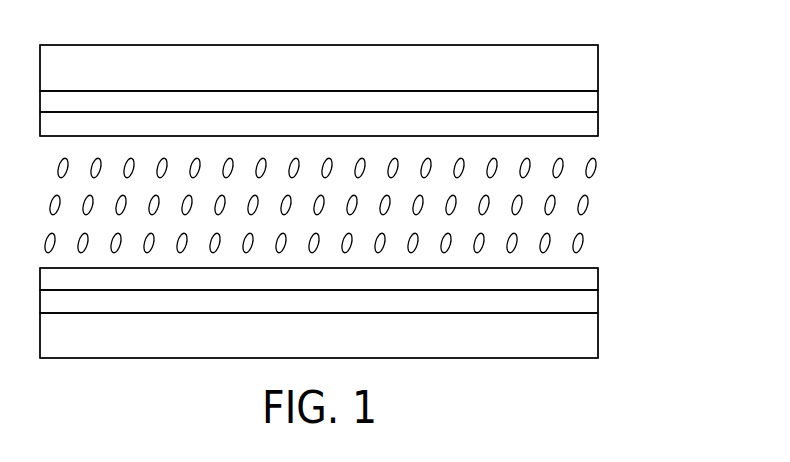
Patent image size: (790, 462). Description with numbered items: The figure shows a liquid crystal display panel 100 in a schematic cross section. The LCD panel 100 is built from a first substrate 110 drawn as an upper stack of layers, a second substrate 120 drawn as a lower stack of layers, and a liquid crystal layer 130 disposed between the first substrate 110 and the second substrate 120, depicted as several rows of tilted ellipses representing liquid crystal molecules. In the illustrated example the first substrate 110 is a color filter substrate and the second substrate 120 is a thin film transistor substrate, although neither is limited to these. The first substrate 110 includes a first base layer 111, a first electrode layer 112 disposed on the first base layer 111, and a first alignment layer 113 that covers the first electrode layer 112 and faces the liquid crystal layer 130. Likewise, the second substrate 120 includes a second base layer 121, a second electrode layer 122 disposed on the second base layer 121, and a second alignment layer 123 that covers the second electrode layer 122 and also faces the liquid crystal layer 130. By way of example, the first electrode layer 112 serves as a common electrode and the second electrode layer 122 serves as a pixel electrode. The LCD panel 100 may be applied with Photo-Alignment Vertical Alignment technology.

The liquid crystal display panel 100 is at (713, 30).
The first substrate 110 is at (659, 45).
The first base layer 111 is at (583, 71).
The first electrode layer 112 is at (585, 102).
The first alignment layer 113 is at (584, 125).
The second substrate 120 is at (659, 268).
The second base layer 121 is at (584, 333).
The second electrode layer 122 is at (585, 300).
The second alignment layer 123 is at (585, 278).
The liquid crystal layer 130 is at (588, 207).